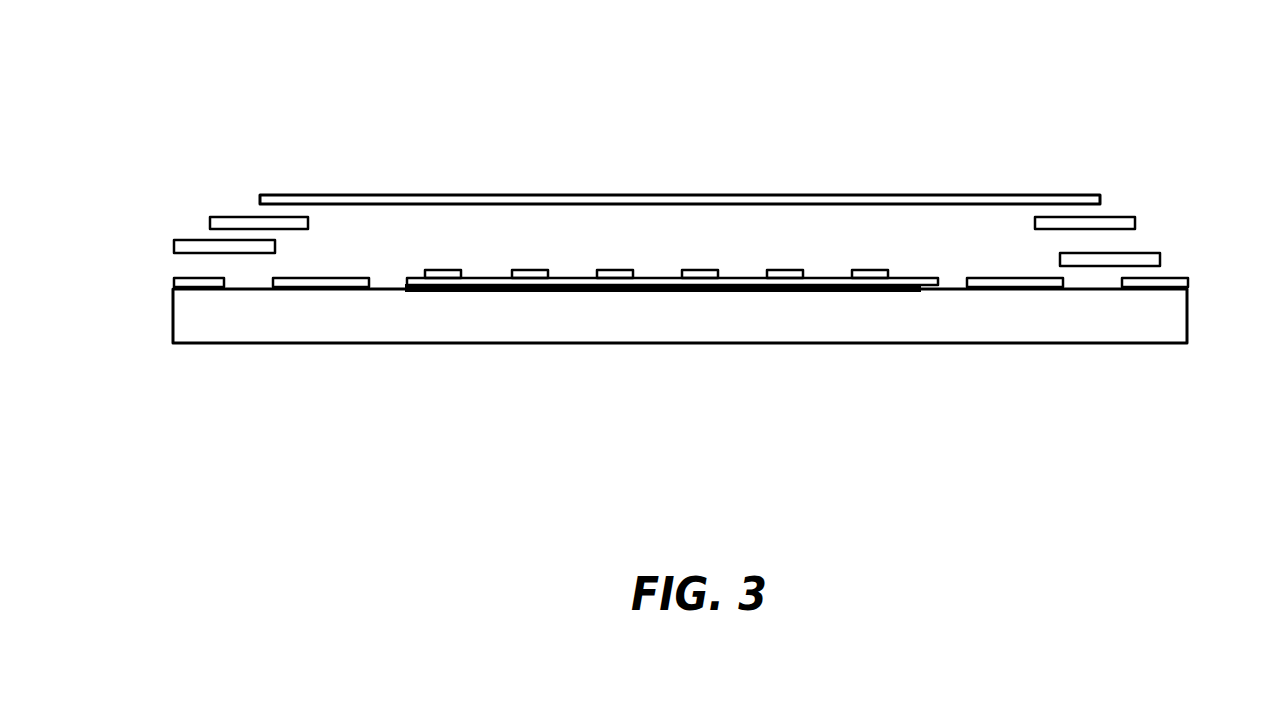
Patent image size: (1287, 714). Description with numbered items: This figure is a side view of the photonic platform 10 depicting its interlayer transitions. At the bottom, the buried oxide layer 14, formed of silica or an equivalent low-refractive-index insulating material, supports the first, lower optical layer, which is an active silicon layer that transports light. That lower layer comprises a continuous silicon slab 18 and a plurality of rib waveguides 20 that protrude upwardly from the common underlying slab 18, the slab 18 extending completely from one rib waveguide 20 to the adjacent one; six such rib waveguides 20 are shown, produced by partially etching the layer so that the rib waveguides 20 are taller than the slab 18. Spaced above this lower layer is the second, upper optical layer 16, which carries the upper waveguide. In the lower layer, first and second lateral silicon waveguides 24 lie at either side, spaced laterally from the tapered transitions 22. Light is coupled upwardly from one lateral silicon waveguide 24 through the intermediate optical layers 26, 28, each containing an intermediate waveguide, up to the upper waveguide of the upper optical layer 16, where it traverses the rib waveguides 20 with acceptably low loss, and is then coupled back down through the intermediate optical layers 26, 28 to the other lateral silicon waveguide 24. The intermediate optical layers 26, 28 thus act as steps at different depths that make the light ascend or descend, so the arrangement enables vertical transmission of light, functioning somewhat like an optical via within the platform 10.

The photonic platform 10 is at (1002, 51).
The buried oxide layer 14 is at (230, 325).
The second (upper) optical layer 16 is at (458, 193).
The silicon slab 18 is at (413, 290).
The rib waveguides 20 is at (475, 288).
The tapered transitions 22 is at (313, 290).
The lateral silicon waveguides 24 is at (173, 277).
The first intermediate optical layer 26 is at (180, 245).
The second intermediate optical layer 28 is at (230, 217).